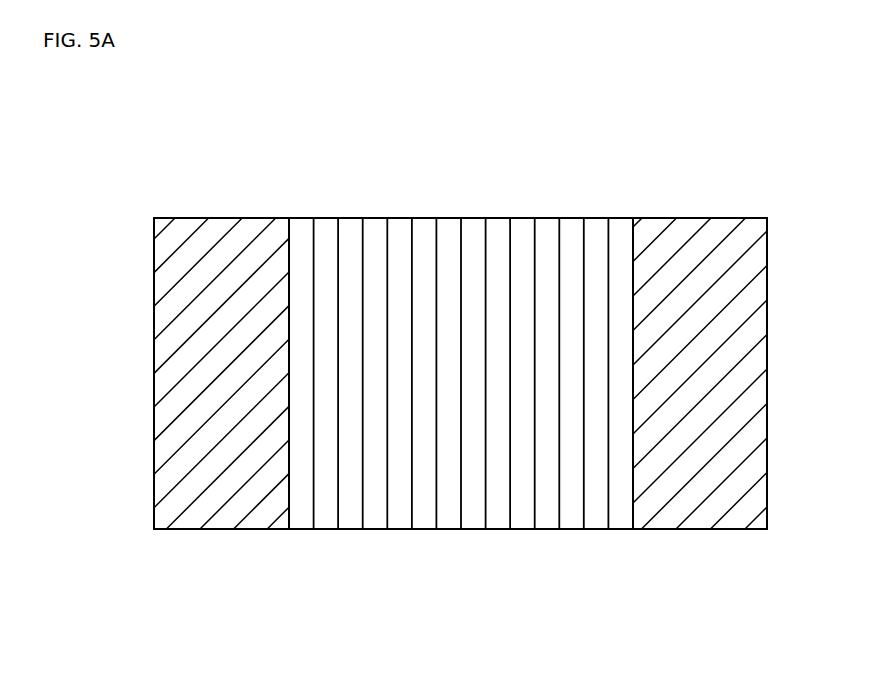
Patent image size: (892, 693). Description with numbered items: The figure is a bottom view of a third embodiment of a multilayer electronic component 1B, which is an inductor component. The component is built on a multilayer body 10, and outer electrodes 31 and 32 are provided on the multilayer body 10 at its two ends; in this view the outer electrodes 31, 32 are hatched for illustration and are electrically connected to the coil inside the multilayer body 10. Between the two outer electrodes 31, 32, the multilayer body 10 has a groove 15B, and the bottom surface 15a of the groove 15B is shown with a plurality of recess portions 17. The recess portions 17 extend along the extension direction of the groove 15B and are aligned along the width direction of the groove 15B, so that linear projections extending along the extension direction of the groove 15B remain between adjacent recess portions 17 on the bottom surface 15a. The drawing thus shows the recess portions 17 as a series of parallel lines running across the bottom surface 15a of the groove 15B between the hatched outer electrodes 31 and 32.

The multilayer electronic component 1B is at (520, 196).
The multilayer body 10 is at (349, 237).
The groove 15B is at (448, 228).
The bottom surface 15a is at (520, 425).
The recess portions 17 is at (300, 508).
The outer electrode 31 is at (237, 492).
The outer electrode 32 is at (708, 492).